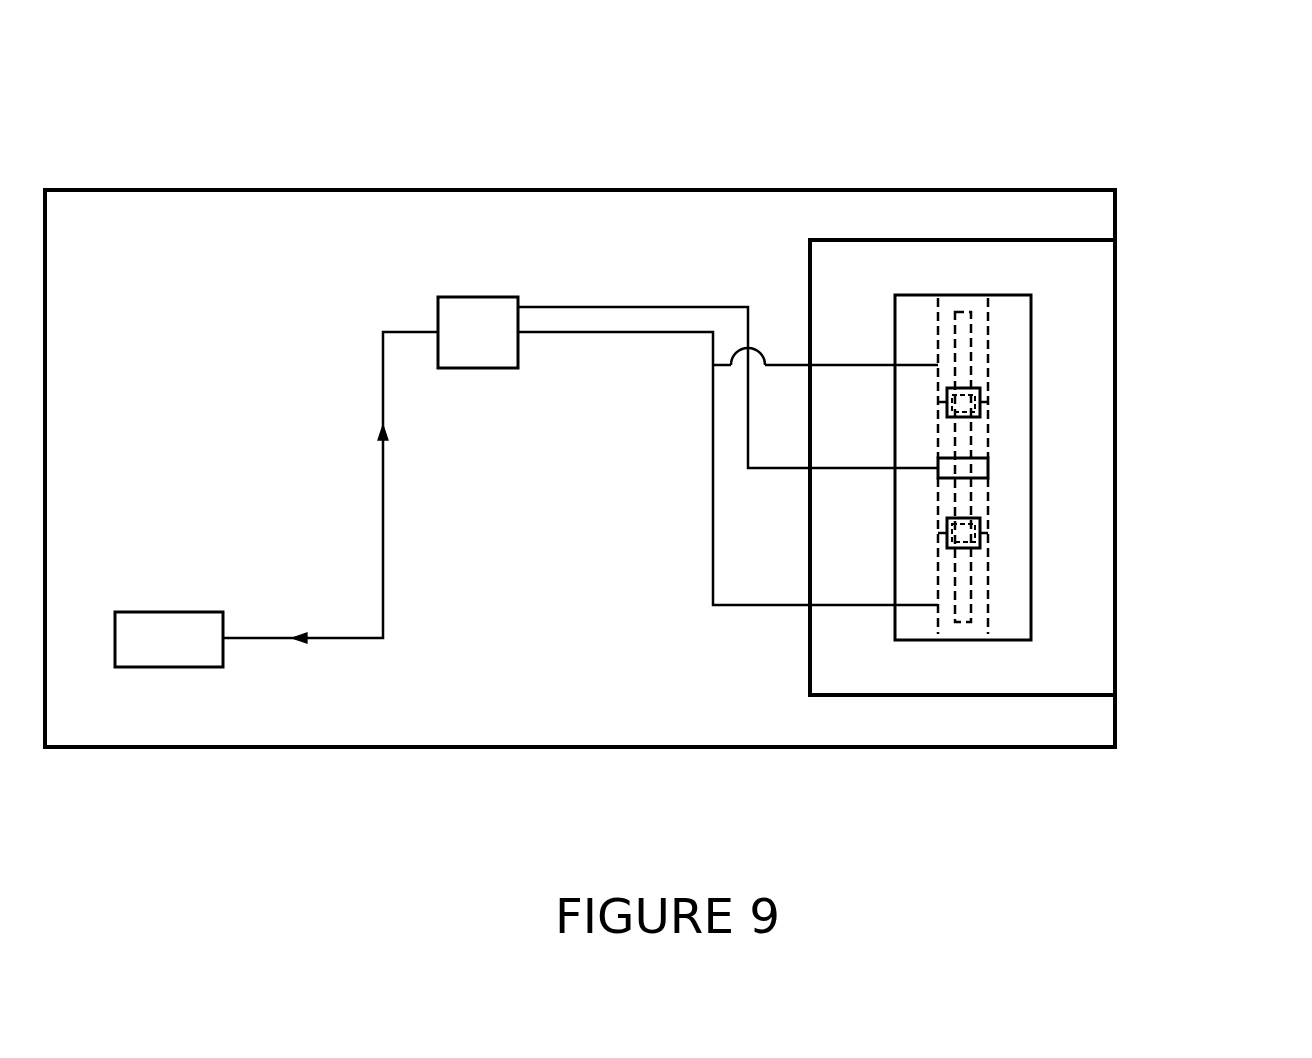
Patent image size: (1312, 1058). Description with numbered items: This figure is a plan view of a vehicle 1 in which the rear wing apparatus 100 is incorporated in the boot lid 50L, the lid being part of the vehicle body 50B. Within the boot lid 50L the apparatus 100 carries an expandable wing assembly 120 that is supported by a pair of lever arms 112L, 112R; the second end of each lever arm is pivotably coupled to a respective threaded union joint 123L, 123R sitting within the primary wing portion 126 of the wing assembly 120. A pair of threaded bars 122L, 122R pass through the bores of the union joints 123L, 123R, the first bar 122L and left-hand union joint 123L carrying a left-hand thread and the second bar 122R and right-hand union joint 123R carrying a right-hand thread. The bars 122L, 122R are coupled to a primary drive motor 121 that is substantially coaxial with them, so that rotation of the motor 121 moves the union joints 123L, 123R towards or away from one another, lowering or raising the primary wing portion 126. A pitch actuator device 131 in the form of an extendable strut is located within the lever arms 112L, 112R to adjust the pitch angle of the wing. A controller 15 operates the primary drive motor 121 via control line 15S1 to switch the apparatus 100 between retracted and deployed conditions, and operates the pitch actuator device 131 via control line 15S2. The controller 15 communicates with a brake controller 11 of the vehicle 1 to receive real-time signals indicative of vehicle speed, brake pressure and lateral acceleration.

The vehicle 1 is at (1102, 102).
The brake controller 11 is at (172, 637).
The controller 15 is at (485, 307).
The control line 15S1 is at (610, 305).
The control line 15S2 is at (613, 335).
The body 50B is at (555, 718).
The boot lid 50L is at (1072, 413).
The rear wing apparatus 100 is at (1057, 565).
The expandable wing assembly 120 is at (998, 493).
The primary drive motor 121 is at (1109, 359).
The second threaded bar 122R is at (890, 262).
The first threaded bar 122L is at (890, 668).
The right-hand lever arm 112R is at (978, 323).
The left-hand lever arm 112L is at (978, 628).
The right-hand union joint 123R is at (1117, 284).
The left-hand union joint 123L is at (1113, 645).
The primary wing portion 126 is at (986, 534).
The pitch actuator device 131 is at (963, 625).